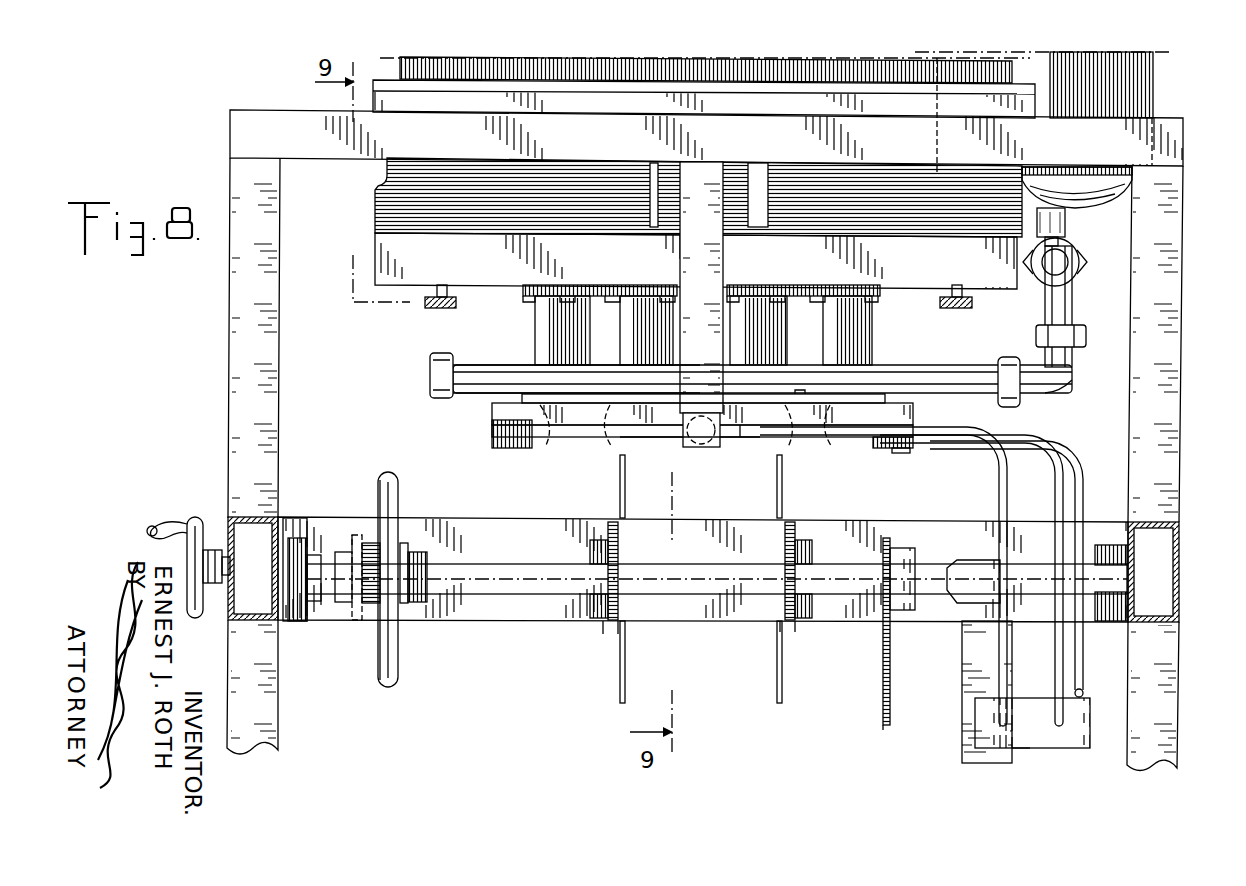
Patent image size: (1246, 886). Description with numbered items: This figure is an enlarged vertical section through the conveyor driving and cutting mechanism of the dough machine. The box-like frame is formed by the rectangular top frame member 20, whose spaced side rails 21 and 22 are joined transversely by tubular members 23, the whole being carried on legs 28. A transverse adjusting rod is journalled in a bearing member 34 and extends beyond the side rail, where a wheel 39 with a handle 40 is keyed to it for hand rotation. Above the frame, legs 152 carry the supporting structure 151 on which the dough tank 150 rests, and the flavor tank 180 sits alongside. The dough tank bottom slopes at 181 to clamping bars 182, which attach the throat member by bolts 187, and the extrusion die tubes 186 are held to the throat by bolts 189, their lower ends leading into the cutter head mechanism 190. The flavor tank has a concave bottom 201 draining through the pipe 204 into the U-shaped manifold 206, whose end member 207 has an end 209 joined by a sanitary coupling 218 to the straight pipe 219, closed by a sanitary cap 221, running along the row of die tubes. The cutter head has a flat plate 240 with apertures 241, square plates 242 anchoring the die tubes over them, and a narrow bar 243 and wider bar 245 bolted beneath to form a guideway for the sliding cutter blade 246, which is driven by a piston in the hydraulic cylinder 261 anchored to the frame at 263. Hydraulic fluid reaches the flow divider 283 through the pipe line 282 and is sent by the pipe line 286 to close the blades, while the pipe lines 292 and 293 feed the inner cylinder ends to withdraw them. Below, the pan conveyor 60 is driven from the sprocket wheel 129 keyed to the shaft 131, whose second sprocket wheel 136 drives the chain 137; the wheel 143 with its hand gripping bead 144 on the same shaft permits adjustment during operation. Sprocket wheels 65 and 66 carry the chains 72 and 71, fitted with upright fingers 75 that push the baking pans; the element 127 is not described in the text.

The top frame member 20 is at (1180, 582).
The side rail 21 is at (247, 514).
The side rail 22 is at (1156, 524).
The tubular member 23 is at (970, 566).
The leg 28 is at (265, 718).
The bearing member 34 is at (298, 540).
The wheel 39 is at (213, 616).
The handle 40 is at (165, 528).
The pan conveyor 60 is at (775, 628).
The sprocket wheel 65 is at (618, 554).
The sprocket wheel 66 is at (780, 548).
The chain 71 is at (800, 535).
The chain 72 is at (605, 531).
The upright finger 75 is at (620, 478).
The chain 127 is at (881, 670).
The sprocket wheel 129 is at (897, 588).
The shaft 131 is at (470, 578).
The sprocket wheel 136 is at (343, 581).
The chain 137 is at (356, 522).
The wheel 143 is at (396, 660).
The hand gripping bead 144 is at (388, 471).
The dough tank 150 is at (557, 72).
The supporting structure 151 is at (988, 103).
The leg 152 is at (240, 348).
The flavor tank 180 is at (1130, 88).
The sloping bottom 181 is at (830, 193).
The clamping bar 182 is at (820, 267).
The extrusion die tube 186 is at (588, 336).
The bolt 187 is at (428, 306).
The bolt 189 is at (618, 300).
The cutter head mechanism 190 is at (640, 444).
The concave bottom 201 is at (1115, 195).
The pipe 204 is at (1060, 228).
The U-shaped manifold 206 is at (918, 368).
The U-shaped end member 207 is at (1072, 380).
The end 209 is at (1040, 393).
The sanitary coupling 218 is at (1008, 357).
The pipe 219 is at (470, 364).
The sanitary cap 221 is at (430, 383).
The plate 240 is at (492, 415).
The aperture 241 is at (556, 448).
The square shaped plate 242 is at (530, 394).
The narrow bar 243 is at (492, 433).
The wider bar 245 is at (523, 448).
The cutter blade 246 is at (742, 440).
The cylinder 261 is at (696, 450).
The anchorage 263 is at (724, 332).
The pipe line 282 is at (1025, 735).
The flow divider 283 is at (1076, 713).
The pipe line 286 is at (1000, 647).
The pipe line 292 is at (1082, 658).
The pipe line 293 is at (1082, 692).